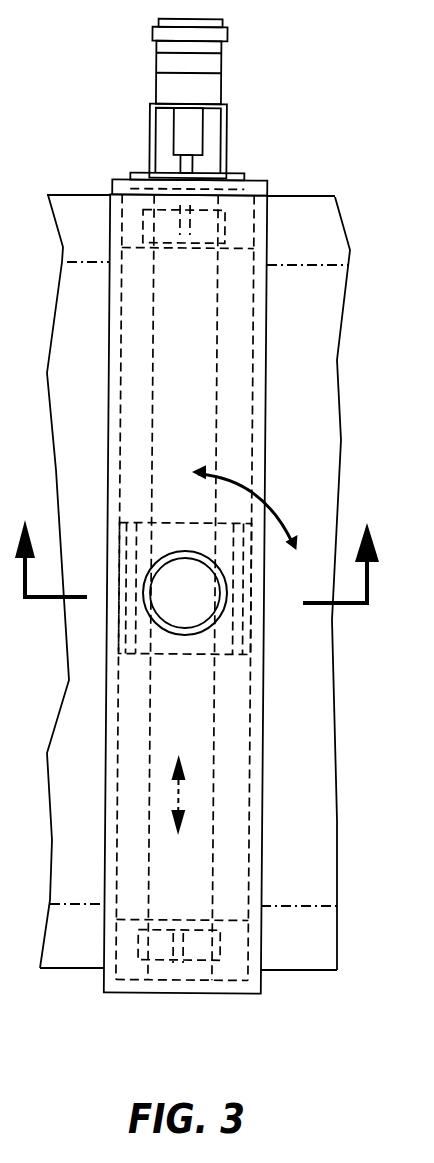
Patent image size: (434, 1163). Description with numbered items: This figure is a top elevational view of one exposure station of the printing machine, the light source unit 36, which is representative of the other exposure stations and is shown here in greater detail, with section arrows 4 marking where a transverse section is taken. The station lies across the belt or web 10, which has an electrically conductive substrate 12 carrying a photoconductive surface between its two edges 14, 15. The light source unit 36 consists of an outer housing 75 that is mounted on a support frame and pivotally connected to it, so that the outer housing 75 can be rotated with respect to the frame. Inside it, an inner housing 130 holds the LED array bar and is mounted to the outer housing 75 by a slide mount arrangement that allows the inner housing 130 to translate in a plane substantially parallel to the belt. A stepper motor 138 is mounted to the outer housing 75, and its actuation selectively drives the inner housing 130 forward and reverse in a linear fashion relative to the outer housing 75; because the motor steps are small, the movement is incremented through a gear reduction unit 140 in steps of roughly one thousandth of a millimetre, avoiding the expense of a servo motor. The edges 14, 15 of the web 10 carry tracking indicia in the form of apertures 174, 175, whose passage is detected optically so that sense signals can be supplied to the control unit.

The web 10 is at (352, 707).
The electrical conductive substrate 12 is at (333, 298).
The edge 14 is at (318, 228).
The edge 15 is at (318, 947).
The light source unit 36 is at (284, 331).
The outer housing 75 is at (268, 185).
The inner housing 130 is at (212, 860).
The stepper motor 138 is at (210, 65).
The gear reduction unit 140 is at (190, 135).
The aperture 174 is at (176, 955).
The aperture 175 is at (178, 217).
The section line 4- 4 is at (197, 547).